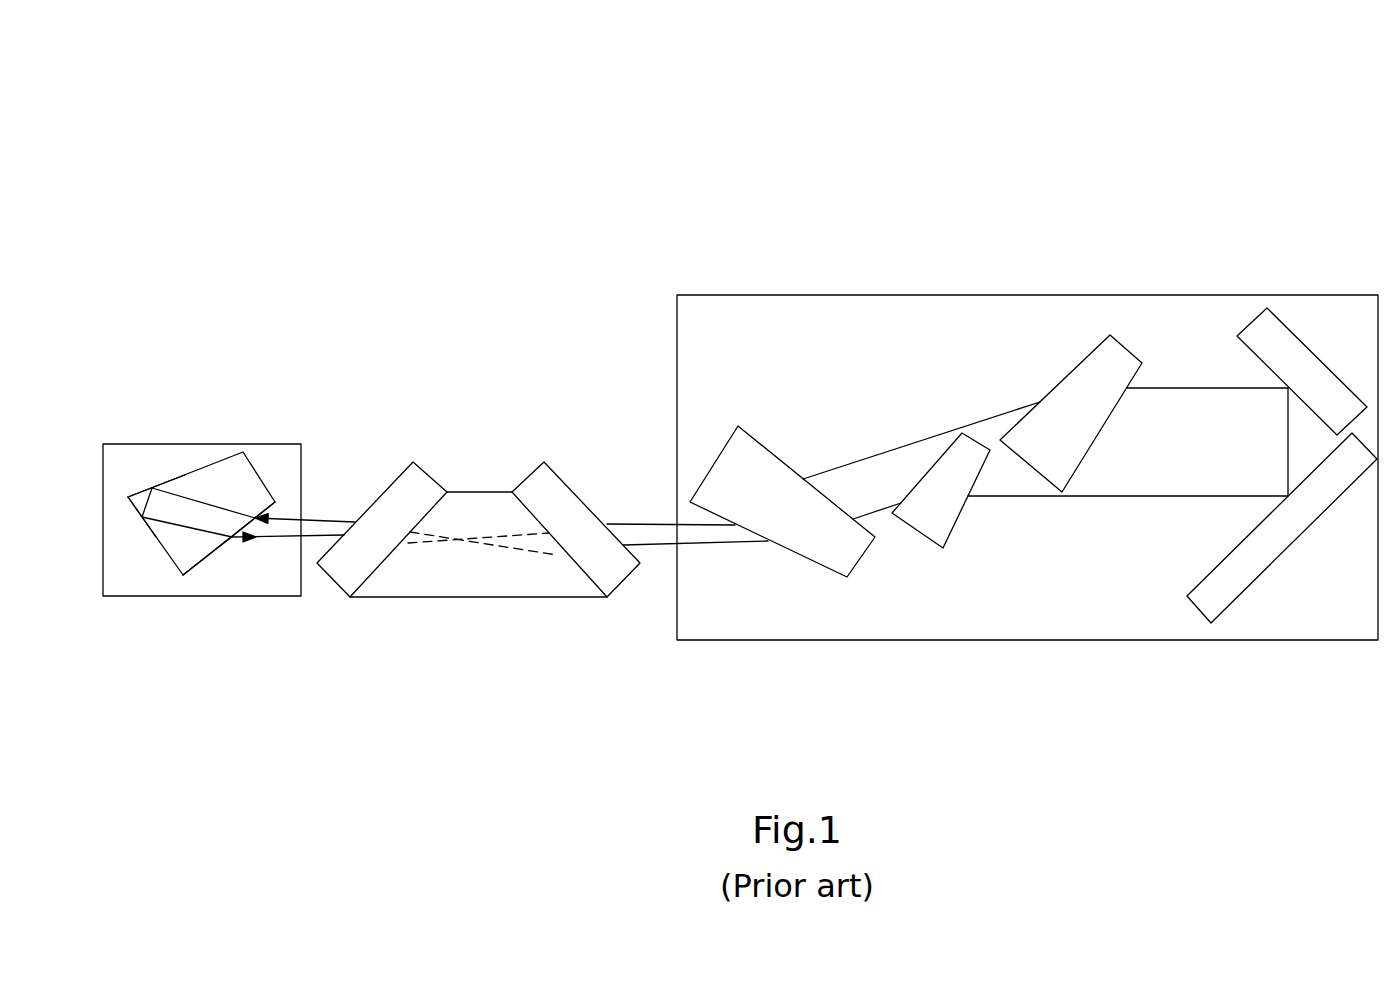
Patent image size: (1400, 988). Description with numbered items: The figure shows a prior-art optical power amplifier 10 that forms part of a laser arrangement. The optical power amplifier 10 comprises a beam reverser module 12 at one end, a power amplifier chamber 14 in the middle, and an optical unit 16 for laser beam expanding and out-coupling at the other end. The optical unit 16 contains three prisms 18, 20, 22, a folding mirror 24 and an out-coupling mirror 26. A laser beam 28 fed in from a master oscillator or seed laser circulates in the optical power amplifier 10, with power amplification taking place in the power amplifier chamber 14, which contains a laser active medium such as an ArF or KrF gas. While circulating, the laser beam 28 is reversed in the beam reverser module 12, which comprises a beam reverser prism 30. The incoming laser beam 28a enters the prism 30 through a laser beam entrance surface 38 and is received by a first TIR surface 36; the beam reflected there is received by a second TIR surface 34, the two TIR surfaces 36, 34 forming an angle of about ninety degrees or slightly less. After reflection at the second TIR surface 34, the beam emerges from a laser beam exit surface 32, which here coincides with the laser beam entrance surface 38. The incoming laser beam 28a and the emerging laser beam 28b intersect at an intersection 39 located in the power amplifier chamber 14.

The optical power amplifier 10 is at (730, 111).
The beam reverser module 12 is at (202, 450).
The power amplifier chamber 14 is at (478, 457).
The optical unit 16 is at (1027, 386).
The prism 18 is at (815, 538).
The prism 20 is at (938, 512).
The prism 22 is at (1058, 443).
The folding mirror 24 is at (1280, 334).
The out-coupling mirror 26 is at (1279, 529).
The laser beam 28 is at (284, 448).
The incoming laser beam 28a is at (305, 518).
The emerging laser beam 28b is at (282, 538).
The beam reverser prism 30 is at (233, 464).
The laser beam exit surface 32 is at (218, 550).
The second TIR surface 34 is at (146, 518).
The first TIR surface 36 is at (152, 488).
The laser beam entrance surface 38 is at (270, 502).
The intersection 39 is at (465, 538).